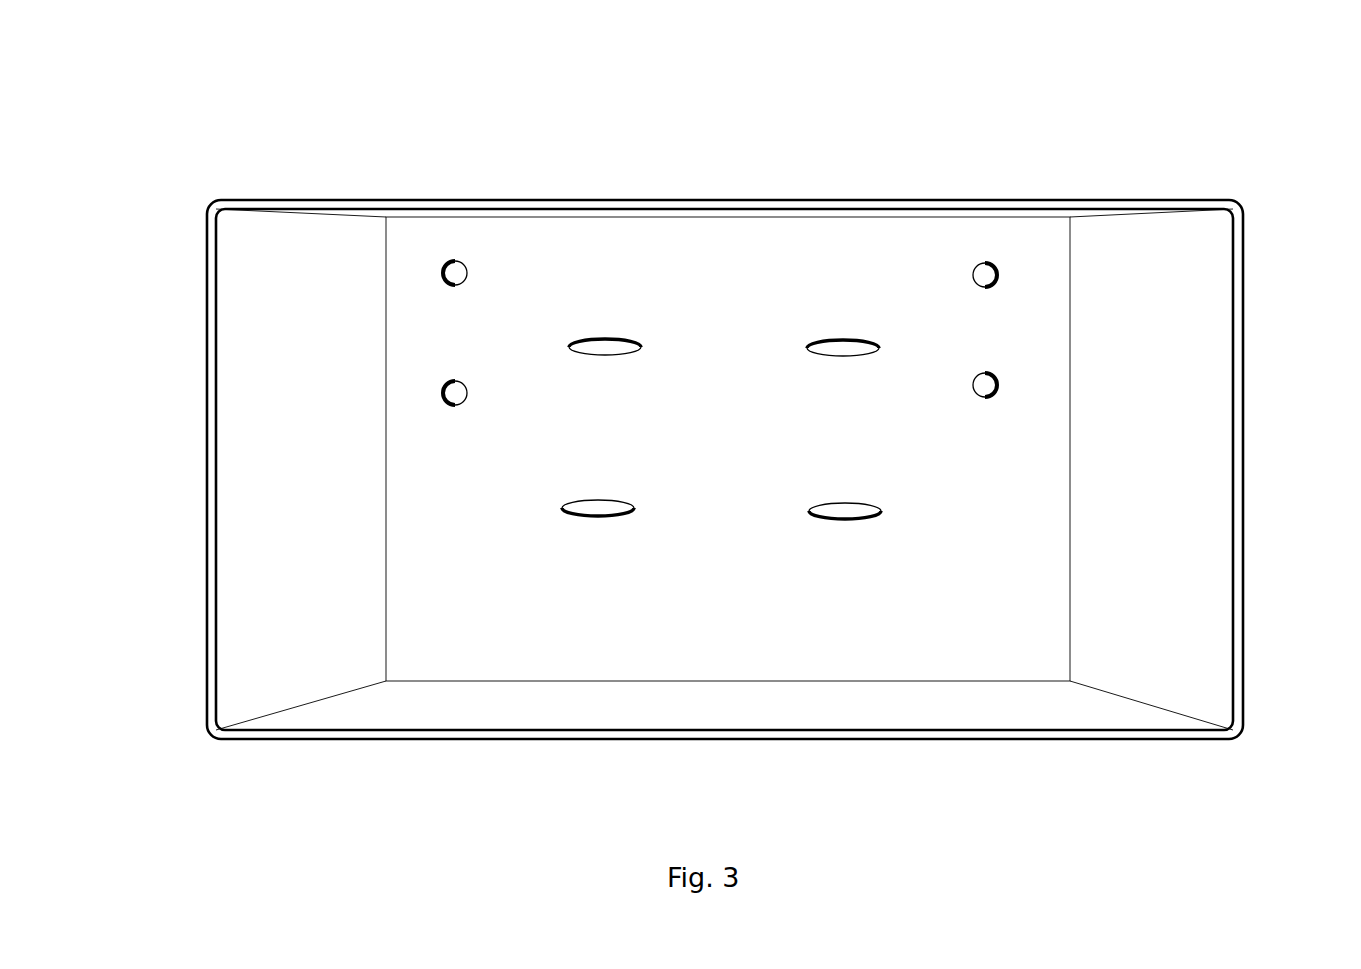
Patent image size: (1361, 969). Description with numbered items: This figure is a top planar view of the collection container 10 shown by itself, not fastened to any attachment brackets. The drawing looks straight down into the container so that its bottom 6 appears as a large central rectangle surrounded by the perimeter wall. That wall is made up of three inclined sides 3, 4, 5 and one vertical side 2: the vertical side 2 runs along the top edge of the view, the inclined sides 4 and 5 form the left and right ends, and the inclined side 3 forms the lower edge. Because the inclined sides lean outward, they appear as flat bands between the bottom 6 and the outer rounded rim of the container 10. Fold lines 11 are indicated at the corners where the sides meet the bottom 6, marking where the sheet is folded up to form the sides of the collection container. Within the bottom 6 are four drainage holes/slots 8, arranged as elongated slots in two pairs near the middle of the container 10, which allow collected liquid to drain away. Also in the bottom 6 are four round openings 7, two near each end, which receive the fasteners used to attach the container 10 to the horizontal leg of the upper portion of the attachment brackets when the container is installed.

The collection container 10 is at (1220, 145).
The vertical side 2 is at (873, 201).
The inclined side 3 is at (560, 745).
The inclined side 4 is at (207, 404).
The inclined side 5 is at (1236, 532).
The bottom 6 is at (555, 632).
The openings 7 is at (437, 378).
The drainage holes/slots 8 is at (620, 498).
The fold lines 11 is at (386, 637).